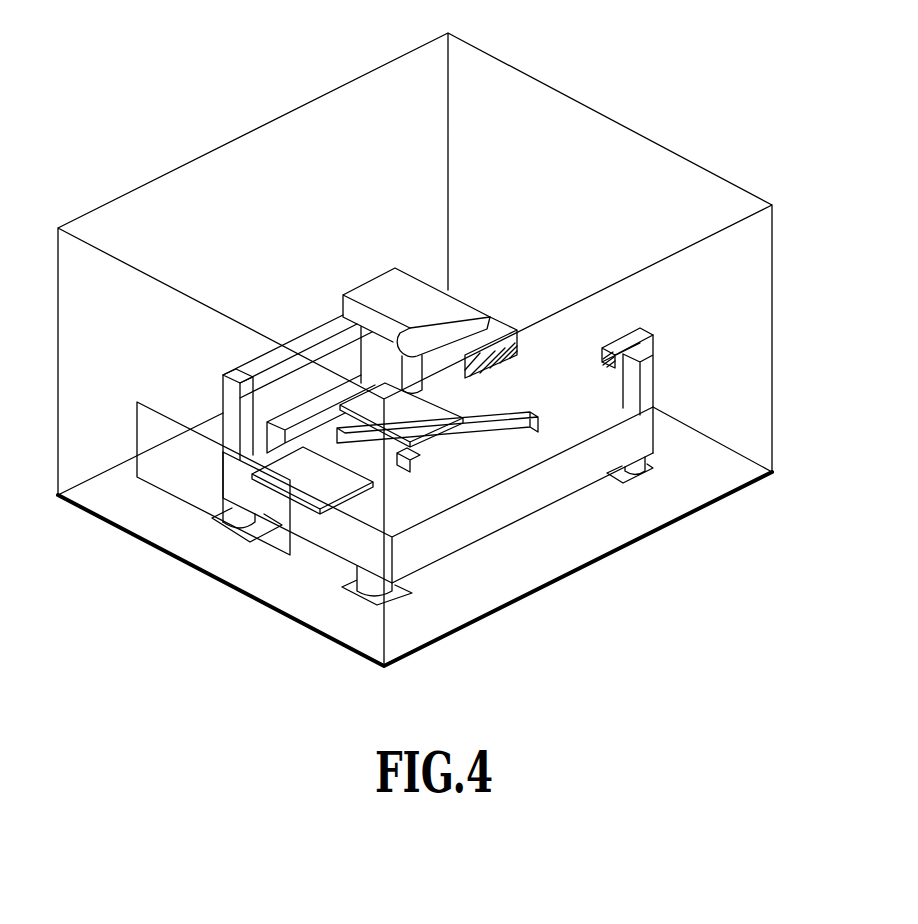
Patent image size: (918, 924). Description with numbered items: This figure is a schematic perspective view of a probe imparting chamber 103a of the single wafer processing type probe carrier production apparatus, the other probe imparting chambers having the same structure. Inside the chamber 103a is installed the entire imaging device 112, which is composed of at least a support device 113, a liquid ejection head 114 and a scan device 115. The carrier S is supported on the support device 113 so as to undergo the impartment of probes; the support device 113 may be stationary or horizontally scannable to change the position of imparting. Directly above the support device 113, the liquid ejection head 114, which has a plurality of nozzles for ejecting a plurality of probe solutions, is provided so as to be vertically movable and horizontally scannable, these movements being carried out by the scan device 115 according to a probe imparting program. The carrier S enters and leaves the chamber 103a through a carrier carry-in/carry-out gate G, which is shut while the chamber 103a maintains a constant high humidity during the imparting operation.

The probe imparting chamber 103a is at (256, 118).
The imaging device 112 is at (648, 440).
The support device 113 is at (453, 447).
The liquid ejection head 114 is at (472, 310).
The scan device 115 is at (377, 290).
The carrier S is at (445, 413).
The carrier carry-in/carry-out gate G is at (170, 487).